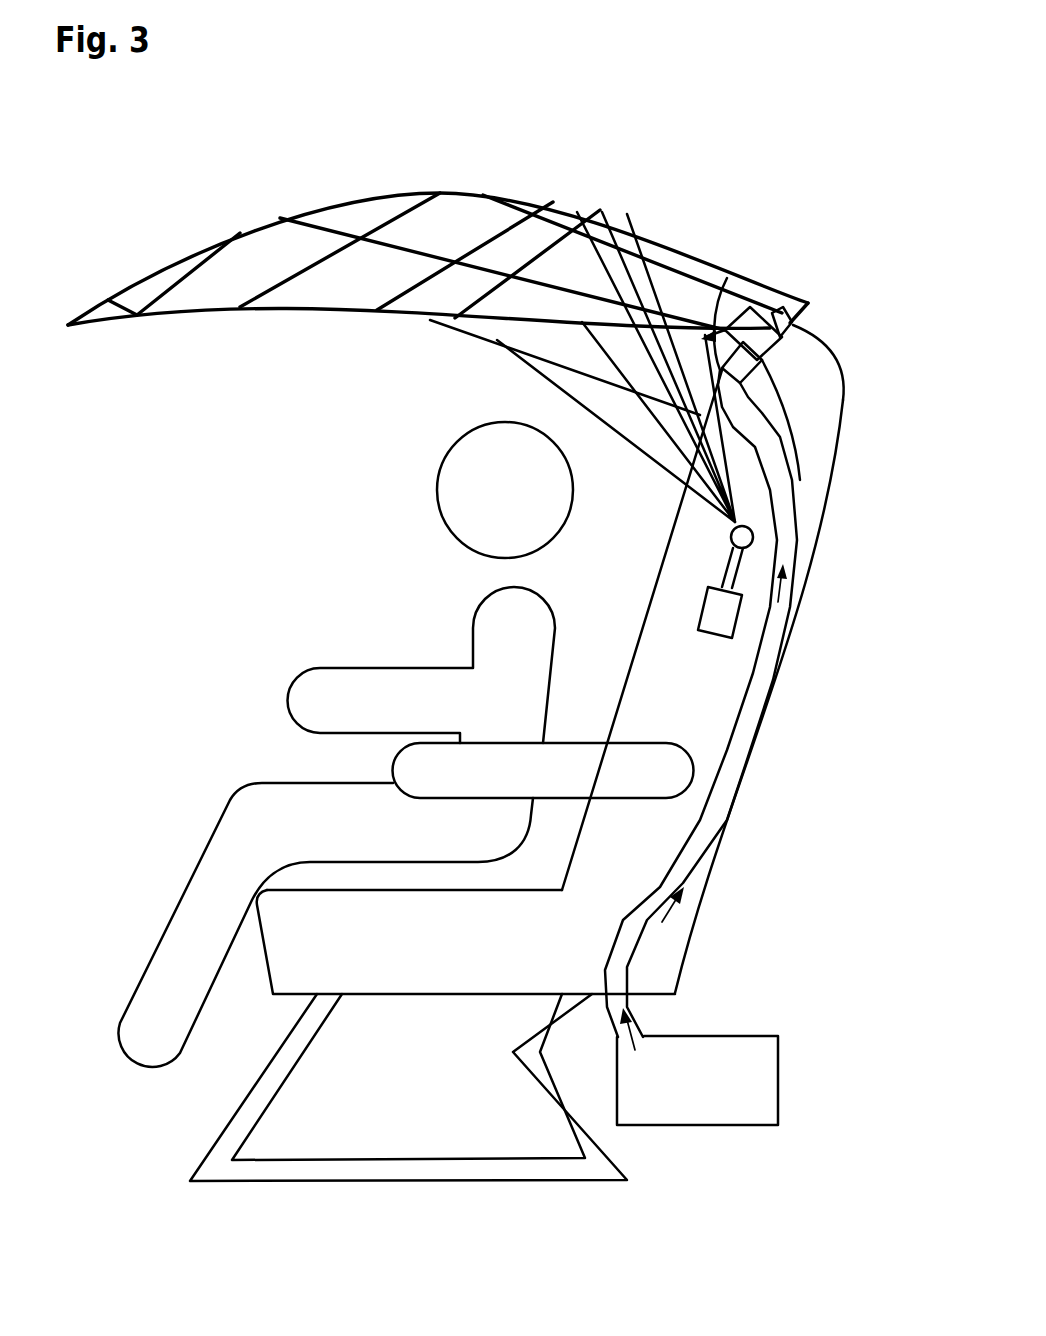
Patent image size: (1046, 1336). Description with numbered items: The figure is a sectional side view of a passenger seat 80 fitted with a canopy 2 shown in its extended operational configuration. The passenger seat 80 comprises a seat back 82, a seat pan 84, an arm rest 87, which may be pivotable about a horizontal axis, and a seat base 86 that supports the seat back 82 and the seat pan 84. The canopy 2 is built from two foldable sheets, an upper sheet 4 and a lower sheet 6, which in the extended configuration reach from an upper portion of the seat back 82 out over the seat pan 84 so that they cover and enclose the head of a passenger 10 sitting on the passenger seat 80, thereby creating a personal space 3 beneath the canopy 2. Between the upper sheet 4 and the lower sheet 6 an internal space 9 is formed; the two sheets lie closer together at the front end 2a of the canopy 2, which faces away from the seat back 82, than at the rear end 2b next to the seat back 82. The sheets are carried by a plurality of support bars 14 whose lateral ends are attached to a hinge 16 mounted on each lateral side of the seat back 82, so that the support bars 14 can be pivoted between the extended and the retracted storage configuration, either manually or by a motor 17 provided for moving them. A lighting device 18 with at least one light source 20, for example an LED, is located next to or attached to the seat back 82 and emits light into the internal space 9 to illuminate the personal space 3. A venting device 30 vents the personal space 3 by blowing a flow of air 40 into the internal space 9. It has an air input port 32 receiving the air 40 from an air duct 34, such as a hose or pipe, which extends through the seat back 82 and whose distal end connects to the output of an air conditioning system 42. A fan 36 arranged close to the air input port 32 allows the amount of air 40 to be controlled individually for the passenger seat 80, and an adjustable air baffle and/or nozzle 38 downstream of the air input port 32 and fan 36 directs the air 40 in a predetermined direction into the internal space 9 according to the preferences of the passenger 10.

The canopy 2 is at (690, 138).
The front end of the canopy 2a is at (66, 298).
The rear end of the canopy 2b is at (834, 268).
The personal space 3 is at (350, 515).
The upper sheet 4 is at (462, 190).
The lower sheet 6 is at (490, 343).
The internal space 9 is at (256, 240).
The passenger 10 is at (230, 713).
The support bars 14 is at (202, 248).
The hinge 16 is at (732, 538).
The motor 17 is at (716, 612).
The lighting device 18 is at (808, 330).
The light source 20 is at (782, 337).
The venting device 30 is at (772, 382).
The air input port 32 is at (777, 420).
The air duct 34 is at (772, 655).
The fan 36 is at (758, 446).
The air baffle and/or nozzle 38 is at (773, 297).
The flow of air 40 is at (750, 307).
The air conditioning system 42 is at (762, 1088).
The passenger seat 80 is at (792, 946).
The seat back 82 is at (836, 545).
The seat pan 84 is at (427, 975).
The seat base 86 is at (258, 1172).
The arm rest 87 is at (575, 760).